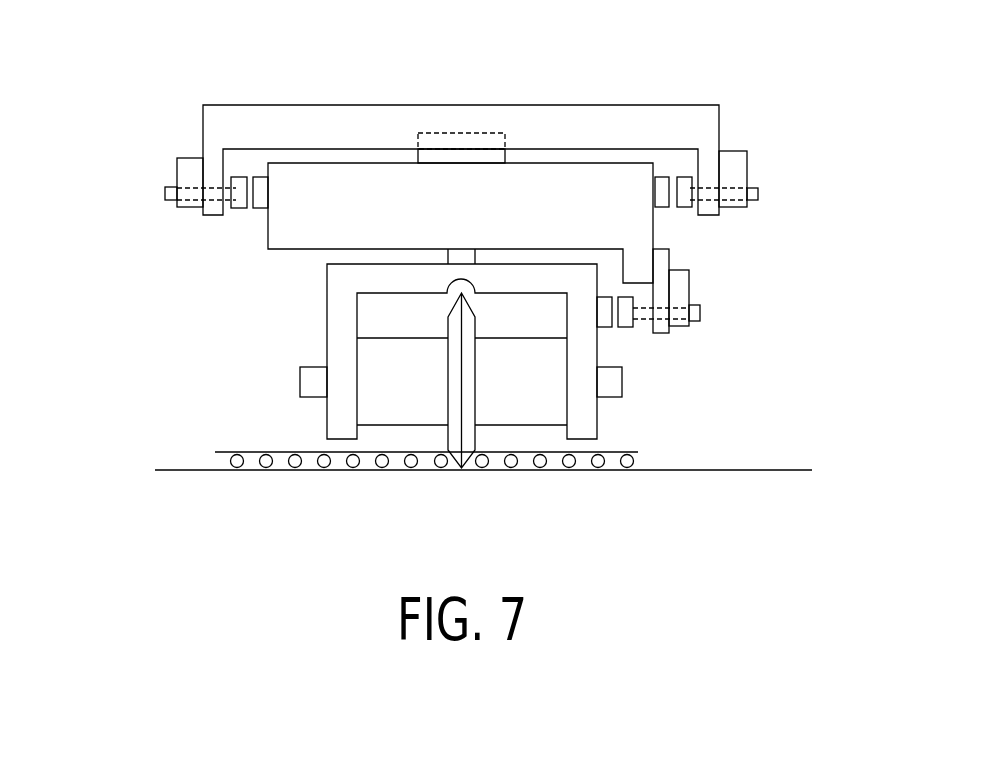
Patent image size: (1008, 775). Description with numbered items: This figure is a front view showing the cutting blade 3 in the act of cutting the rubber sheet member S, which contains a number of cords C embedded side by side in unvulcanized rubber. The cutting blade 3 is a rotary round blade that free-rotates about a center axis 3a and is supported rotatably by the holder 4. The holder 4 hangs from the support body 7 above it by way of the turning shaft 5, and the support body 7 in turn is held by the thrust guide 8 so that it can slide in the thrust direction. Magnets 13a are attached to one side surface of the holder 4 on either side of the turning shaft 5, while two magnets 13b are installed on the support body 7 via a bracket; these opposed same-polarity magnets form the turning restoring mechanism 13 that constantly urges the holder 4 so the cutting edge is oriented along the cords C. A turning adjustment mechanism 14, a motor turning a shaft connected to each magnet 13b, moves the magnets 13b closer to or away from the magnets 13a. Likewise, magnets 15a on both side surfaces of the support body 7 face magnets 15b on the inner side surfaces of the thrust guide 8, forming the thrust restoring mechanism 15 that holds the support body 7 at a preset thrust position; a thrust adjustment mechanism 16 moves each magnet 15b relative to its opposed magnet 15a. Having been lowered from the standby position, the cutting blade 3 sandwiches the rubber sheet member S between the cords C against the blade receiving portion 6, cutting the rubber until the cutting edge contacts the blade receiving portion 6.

The cutting blade 3 is at (457, 413).
The center axis 3a is at (303, 375).
The holder 4 is at (337, 307).
The turning shaft 5 is at (477, 260).
The blade receiving portion 6 is at (217, 480).
The support body 7 is at (388, 175).
The thrust guide 8 is at (517, 113).
The turning restoring mechanism 13 is at (677, 440).
The magnets 13a is at (640, 380).
The magnets 13b is at (690, 380).
The turning adjustment mechanism 14 is at (683, 300).
The thrust restoring mechanism 15 is at (165, 297).
The magnets 15a is at (703, 248).
The magnets 15b is at (150, 243).
The thrust adjustment mechanism 16 is at (742, 173).
The rubber sheet member S is at (275, 438).
The cords C is at (322, 473).